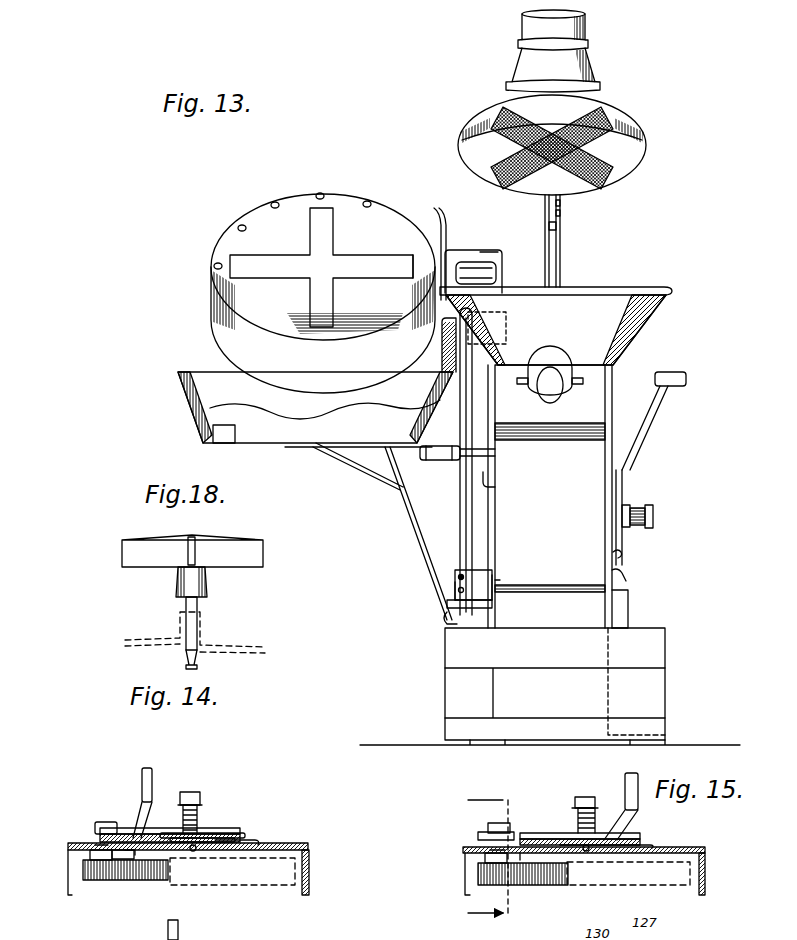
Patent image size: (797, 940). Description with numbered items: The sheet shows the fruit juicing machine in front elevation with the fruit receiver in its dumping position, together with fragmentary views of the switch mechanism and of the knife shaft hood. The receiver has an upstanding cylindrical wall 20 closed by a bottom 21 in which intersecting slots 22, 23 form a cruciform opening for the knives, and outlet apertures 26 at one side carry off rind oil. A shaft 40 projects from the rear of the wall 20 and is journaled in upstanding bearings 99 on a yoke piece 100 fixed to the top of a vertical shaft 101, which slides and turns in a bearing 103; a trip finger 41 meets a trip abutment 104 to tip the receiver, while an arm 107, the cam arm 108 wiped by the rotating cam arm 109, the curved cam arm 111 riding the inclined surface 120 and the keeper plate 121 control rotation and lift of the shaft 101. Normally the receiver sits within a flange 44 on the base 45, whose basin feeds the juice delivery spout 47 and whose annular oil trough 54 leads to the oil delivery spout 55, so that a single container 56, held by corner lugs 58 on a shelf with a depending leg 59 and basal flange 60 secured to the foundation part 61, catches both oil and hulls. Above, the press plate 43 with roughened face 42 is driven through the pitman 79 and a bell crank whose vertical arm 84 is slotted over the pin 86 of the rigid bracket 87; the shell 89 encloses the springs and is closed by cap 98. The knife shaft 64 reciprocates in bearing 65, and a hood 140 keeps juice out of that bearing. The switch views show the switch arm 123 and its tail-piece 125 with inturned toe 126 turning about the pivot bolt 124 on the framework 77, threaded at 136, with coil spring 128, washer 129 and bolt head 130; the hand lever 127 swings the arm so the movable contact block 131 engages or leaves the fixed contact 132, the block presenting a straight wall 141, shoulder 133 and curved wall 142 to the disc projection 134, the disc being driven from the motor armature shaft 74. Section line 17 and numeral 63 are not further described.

In FIG. 13, the removable cap 98 is at (585, 30).
In FIG. 13, the outer enclosing shell 89 is at (590, 62).
In FIG. 13, the roughened face 42 is at (590, 135).
In FIG. 13, the press plate 43 is at (640, 130).
In FIG. 13, the pitman 79 is at (545, 210).
In FIG. 13, the vertical arm of bell crank 84 is at (560, 203).
In FIG. 13, the pin 86 is at (560, 213).
In FIG. 13, the bifurcated rigid bracket 87 is at (556, 228).
In FIG. 13, the flange 44 is at (668, 290).
In FIG. 13, the base 45 is at (655, 305).
In FIG. 13, the juice delivery spout 47 is at (560, 352).
In FIG. 13, the operating hand lever 127 is at (675, 372).
In FIG. 14, the operating hand lever 127 is at (147, 768).
In FIG. 15, the operating hand lever 127 is at (632, 773).
In FIG. 13, the framework 77 is at (604, 435).
In FIG. 14, the framework 77 is at (308, 856).
In FIG. 15, the framework 77 is at (705, 860).
In FIG. 13, the switch arm 123 is at (622, 490).
In FIG. 14, the switch arm 123 is at (133, 828).
In FIG. 15, the switch arm 123 is at (540, 833).
In FIG. 13, the pivot bolt 124 is at (630, 510).
In FIG. 14, the pivot bolt 124 is at (245, 835).
In FIG. 13, the washer 129 is at (645, 512).
In FIG. 14, the washer 129 is at (202, 806).
In FIG. 15, the washer 129 is at (572, 806).
In FIG. 13, the bolt head 130 is at (653, 518).
In FIG. 14, the bolt head 130 is at (192, 792).
In FIG. 15, the bolt head 130 is at (587, 797).
In FIG. 13, the inturned toe 126 is at (622, 555).
In FIG. 14, the inturned toe 126 is at (255, 840).
In FIG. 15, the inturned toe 126 is at (640, 845).
In FIG. 13, the fixed contact member 132 is at (628, 575).
In FIG. 14, the fixed contact member 132 is at (96, 825).
In FIG. 15, the fixed contact member 132 is at (490, 828).
In FIG. 13, the foundation part 61 is at (660, 628).
In FIG. 13, the vertical shaft 101 is at (460, 520).
In FIG. 13, the oil delivery spout 55 is at (445, 360).
In FIG. 13, the trip abutment 104 is at (478, 308).
In FIG. 13, the yoke piece 100 is at (500, 285).
In FIG. 13, the shaft 40 is at (494, 262).
In FIG. 13, the upstanding bearings 99 is at (488, 252).
In FIG. 13, the fruit receiver wall 20 is at (212, 320).
In FIG. 13, the receiver bottom 21 is at (218, 300).
In FIG. 13, the slot 22 is at (333, 238).
In FIG. 13, the slot 23 is at (375, 255).
In FIG. 13, the outlet apertures 26 is at (242, 225).
In FIG. 13, the trip finger 41 is at (436, 208).
In FIG. 14, the trip finger 41 is at (262, 885).
In FIG. 15, the trip finger 41 is at (665, 885).
In FIG. 13, the container 56 is at (195, 403).
In FIG. 13, the corner lugs 58 is at (225, 443).
In FIG. 13, the annular oil trough 54 is at (285, 447).
In FIG. 13, the depending leg 59 is at (415, 548).
In FIG. 13, the keeper plate 121 is at (455, 585).
In FIG. 13, the cam arm 108 is at (440, 460).
In FIG. 13, the arm 107 is at (470, 456).
In FIG. 13, the rotating cam arm 109 is at (490, 484).
In FIG. 13, the curved cam arm 111 is at (480, 578).
In FIG. 13, the inclined surface 120 is at (495, 590).
In FIG. 13, the bearing 103 is at (447, 604).
In FIG. 13, the outturned basal flange 60 is at (441, 620).
In FIG. 18, the handle head 63 is at (232, 538).
In FIG. 18, the hood or deflector 140 is at (176, 590).
In FIG. 18, the knife shaft 64 is at (197, 605).
In FIG. 18, the bearing 65 is at (205, 625).
In FIG. 14, the projection 134 is at (150, 880).
In FIG. 15, the projection 134 is at (540, 885).
In FIG. 14, the coil spring 128 is at (183, 810).
In FIG. 15, the coil spring 128 is at (578, 815).
In FIG. 14, the tail-piece 125 is at (235, 840).
In FIG. 14, the movable contact block 131 is at (98, 860).
In FIG. 15, the movable contact block 131 is at (495, 863).
In FIG. 14, the shoulder or step 133 is at (120, 859).
In FIG. 14, the curved wall 142 is at (100, 848).
In FIG. 15, the curved wall 142 is at (495, 855).
In FIG. 14, the straight wall 141 is at (130, 856).
In FIG. 15, the straight wall 141 is at (520, 860).
In FIG. 14, the armature shaft 74 is at (168, 925).
In FIG. 14, the threaded connection 136 is at (193, 851).
In FIG. 15, the threaded connection 136 is at (586, 851).
In FIG. 15, the section line 17 is at (492, 855).